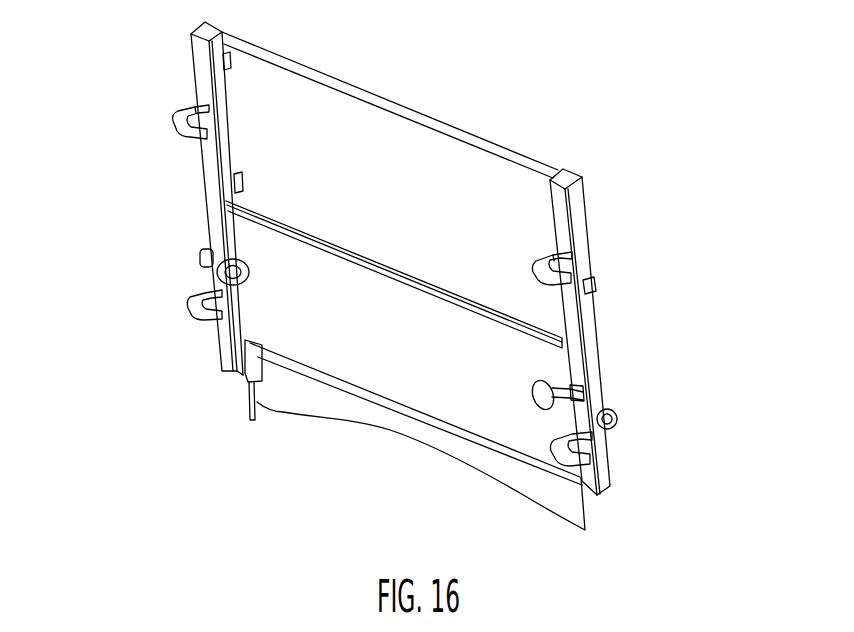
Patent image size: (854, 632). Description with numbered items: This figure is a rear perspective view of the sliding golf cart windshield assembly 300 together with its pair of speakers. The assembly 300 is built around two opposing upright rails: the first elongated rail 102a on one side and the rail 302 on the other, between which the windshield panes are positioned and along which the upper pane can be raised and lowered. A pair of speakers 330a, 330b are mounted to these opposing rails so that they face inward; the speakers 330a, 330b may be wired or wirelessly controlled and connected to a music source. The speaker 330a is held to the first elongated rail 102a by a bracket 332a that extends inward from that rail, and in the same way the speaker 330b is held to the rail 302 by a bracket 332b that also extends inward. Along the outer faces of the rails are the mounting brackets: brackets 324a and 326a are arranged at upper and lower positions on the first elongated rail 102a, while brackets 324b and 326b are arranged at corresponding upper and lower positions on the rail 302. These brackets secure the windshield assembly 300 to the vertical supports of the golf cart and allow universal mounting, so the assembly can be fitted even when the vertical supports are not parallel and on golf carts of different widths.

The sliding golf cart windshield assembly 300 is at (594, 112).
The first elongated rail 102a is at (205, 162).
The rail 302 is at (588, 314).
The bracket 324a is at (172, 123).
The bracket 324b is at (575, 263).
The speaker 330a is at (212, 282).
The speaker 330b is at (550, 380).
The bracket 332a is at (202, 254).
The bracket 332b is at (583, 388).
The bracket 326a is at (208, 323).
The lower hook (right) 326b is at (612, 428).